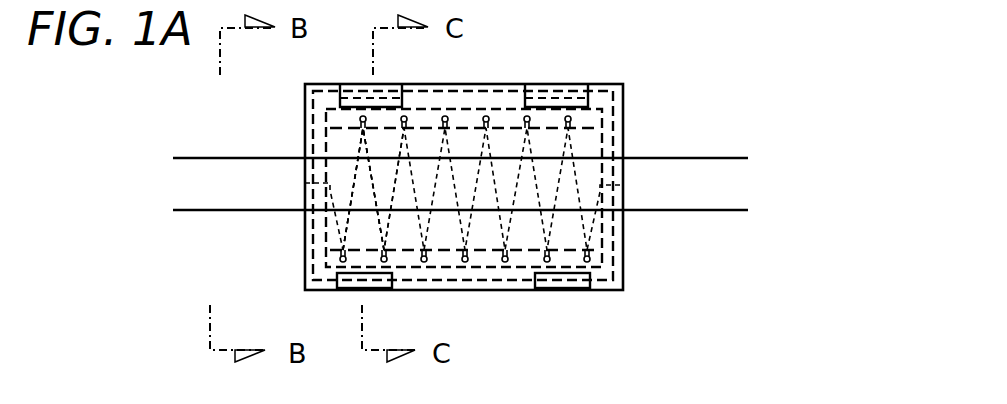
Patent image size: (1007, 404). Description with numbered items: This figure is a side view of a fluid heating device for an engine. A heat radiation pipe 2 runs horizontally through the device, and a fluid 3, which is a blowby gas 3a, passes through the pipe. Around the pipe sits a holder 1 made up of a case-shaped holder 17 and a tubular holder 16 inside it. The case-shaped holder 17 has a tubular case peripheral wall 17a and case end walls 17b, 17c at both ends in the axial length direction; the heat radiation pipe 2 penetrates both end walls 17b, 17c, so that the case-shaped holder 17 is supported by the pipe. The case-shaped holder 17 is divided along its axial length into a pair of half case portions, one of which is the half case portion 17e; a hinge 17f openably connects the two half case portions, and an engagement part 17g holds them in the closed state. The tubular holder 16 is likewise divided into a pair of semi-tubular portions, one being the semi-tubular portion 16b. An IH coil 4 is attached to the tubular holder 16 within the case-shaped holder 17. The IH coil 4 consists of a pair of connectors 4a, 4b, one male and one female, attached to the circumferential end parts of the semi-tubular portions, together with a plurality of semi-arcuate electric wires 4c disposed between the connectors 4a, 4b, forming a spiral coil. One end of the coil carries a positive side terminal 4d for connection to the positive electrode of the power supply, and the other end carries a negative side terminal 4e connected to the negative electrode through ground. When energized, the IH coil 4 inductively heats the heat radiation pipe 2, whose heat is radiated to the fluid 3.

The holder 1 is at (687, 35).
The heat radiation pipe 2 is at (632, 156).
The fluid 3 is at (428, 185).
The blowby gas 3a is at (363, 189).
The IH coil 4 is at (470, 183).
The connector 4a is at (483, 259).
The connector 4b is at (427, 120).
The semi-arcuate electric wires 4c is at (335, 217).
The positive side terminal 4d is at (305, 183).
The negative side terminal 4e is at (620, 185).
The tubular holder 16 is at (608, 120).
The semi-tubular portion 16b is at (565, 233).
The case-shaped holder 17 is at (600, 88).
The case peripheral wall 17a is at (518, 276).
The case end wall 17b is at (304, 246).
The case end wall 17c is at (620, 247).
The half case portion 17e is at (500, 103).
The hinge 17f is at (362, 87).
The engagement part 17g is at (573, 282).